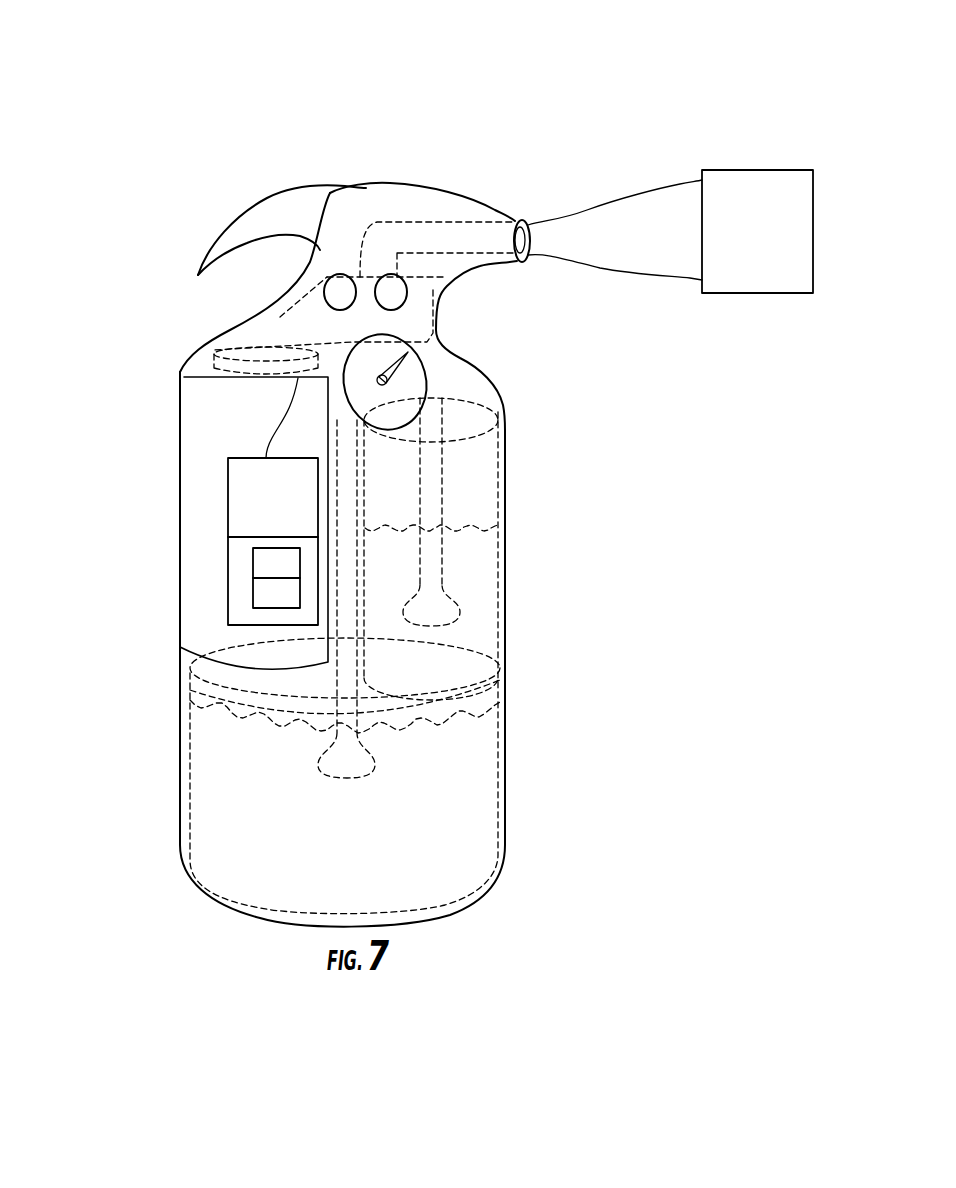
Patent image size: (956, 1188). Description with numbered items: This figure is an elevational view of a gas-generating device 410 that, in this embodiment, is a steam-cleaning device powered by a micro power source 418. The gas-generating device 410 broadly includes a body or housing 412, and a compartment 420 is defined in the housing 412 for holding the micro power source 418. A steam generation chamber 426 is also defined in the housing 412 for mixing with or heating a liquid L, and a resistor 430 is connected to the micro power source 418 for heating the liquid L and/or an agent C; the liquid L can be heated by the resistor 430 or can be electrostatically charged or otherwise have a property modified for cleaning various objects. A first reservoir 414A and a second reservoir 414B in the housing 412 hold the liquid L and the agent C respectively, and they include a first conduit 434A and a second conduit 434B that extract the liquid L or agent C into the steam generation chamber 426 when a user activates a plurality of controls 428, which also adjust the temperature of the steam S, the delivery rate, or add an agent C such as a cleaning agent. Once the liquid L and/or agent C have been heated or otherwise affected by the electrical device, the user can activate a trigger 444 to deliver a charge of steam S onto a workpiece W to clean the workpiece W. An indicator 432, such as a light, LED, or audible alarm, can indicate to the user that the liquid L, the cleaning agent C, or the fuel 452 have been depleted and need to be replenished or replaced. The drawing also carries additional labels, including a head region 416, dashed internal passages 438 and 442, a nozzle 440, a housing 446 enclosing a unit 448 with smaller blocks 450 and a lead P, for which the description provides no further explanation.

The gas-generating device 410 is at (523, 60).
The housing 412 is at (470, 905).
The first reservoir 414A is at (257, 850).
The second reservoir 414B is at (465, 420).
The discharge head 416 is at (483, 200).
The micro power source 418 is at (218, 515).
The compartment 420 is at (187, 643).
The steam generation chamber 426 is at (263, 317).
The controls 428 is at (408, 292).
The resistor 430 is at (212, 348).
The indicator 432 is at (412, 380).
The first conduit 434A is at (348, 765).
The second conduit 434B is at (443, 498).
The valve passage 438 is at (366, 240).
The nozzle 440 is at (528, 240).
The discharge passage 442 is at (427, 238).
The trigger 444 is at (242, 230).
The controller housing 446 is at (228, 488).
The controller 448 is at (286, 505).
The sensor 450 is at (253, 566).
The fuel 452 is at (265, 588).
The power source P is at (282, 420).
The steam S is at (647, 183).
The workpiece W is at (748, 237).
The agent C is at (467, 652).
The liquid L is at (243, 771).